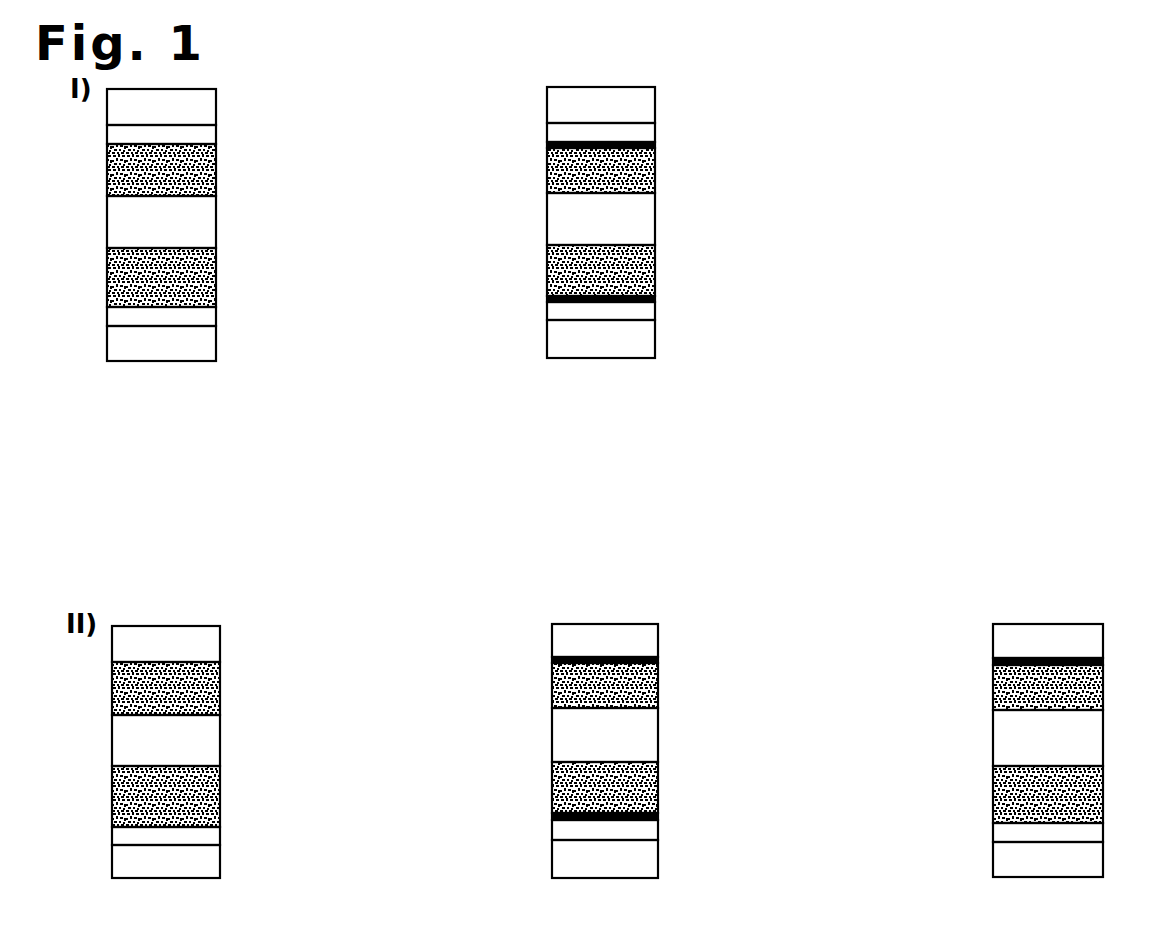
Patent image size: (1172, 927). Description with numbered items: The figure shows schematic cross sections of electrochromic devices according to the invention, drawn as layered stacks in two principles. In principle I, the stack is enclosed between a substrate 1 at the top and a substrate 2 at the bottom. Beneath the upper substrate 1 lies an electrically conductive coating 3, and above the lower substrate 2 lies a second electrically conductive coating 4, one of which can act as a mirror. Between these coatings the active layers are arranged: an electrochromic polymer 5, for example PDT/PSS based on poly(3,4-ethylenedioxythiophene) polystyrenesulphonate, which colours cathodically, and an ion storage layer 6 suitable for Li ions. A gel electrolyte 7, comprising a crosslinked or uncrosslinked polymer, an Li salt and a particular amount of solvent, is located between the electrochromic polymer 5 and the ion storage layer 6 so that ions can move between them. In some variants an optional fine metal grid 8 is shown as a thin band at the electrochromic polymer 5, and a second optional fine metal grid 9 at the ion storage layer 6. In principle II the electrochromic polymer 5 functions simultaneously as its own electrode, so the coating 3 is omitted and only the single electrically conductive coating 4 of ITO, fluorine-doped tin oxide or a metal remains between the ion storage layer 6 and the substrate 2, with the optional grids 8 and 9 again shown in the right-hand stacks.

The substrate 1 is at (196, 104).
The substrate 2 is at (196, 343).
The electrically conductive coating 3 is at (196, 136).
The electrically conductive coating 4 is at (196, 318).
The electrochromic polymer 5 is at (196, 168).
The ion storage layer 6 is at (196, 272).
The gel electrolyte 7 is at (196, 218).
The fine metal grid 8 is at (547, 146).
The fine metal grid 9 is at (547, 299).